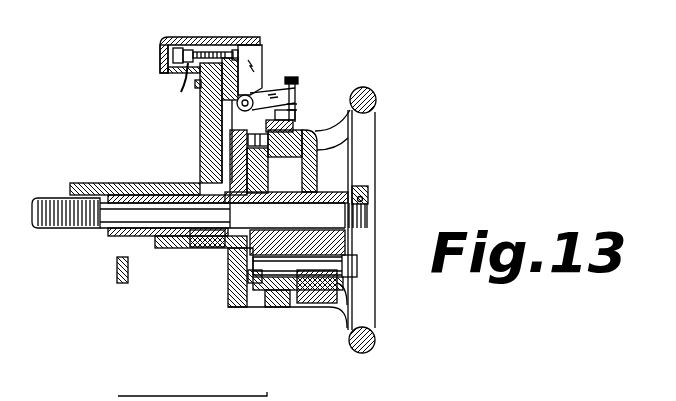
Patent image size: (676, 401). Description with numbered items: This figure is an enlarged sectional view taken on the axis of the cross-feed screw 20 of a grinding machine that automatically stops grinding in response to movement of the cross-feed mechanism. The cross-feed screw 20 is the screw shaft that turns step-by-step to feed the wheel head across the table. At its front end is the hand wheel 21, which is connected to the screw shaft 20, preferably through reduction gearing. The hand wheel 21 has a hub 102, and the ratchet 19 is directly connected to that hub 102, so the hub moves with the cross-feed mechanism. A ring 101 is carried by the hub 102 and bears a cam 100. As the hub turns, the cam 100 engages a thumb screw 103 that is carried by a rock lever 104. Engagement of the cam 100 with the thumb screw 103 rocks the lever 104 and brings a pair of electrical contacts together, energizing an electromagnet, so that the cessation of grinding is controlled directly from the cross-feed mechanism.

The cross-feed screw 20 is at (65, 228).
The ratchet 19 is at (253, 310).
The hand wheel 21 is at (367, 148).
The cam 100 is at (292, 117).
The ring 101 is at (278, 310).
The hub 102 is at (305, 307).
The thumb screw 103 is at (293, 78).
The rock lever 104 is at (262, 78).